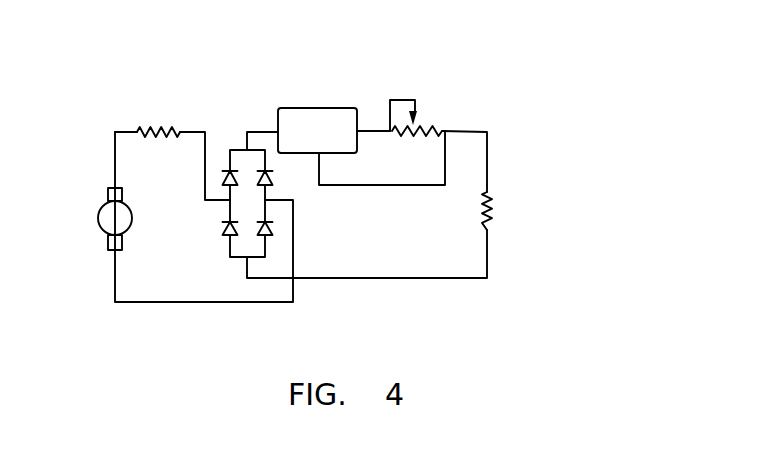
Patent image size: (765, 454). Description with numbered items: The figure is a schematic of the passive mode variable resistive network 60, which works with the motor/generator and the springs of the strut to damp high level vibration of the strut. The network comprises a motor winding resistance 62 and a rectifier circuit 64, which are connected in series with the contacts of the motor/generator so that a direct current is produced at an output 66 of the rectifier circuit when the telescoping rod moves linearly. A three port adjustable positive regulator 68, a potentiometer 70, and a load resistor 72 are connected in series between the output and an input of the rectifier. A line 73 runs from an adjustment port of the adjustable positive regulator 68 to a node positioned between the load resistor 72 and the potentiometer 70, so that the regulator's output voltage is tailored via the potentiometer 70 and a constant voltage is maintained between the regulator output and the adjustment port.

The passive mode variable resistive network 60 is at (534, 107).
The motor winding resistance 62 is at (140, 130).
The rectifier circuit 64 is at (223, 241).
The output of the rectifier circuit 66 is at (245, 149).
The three port adjustable positive regulator 68 is at (320, 108).
The potentiometer 70 is at (416, 122).
The load resistor 72 is at (488, 202).
The line 73 is at (388, 186).